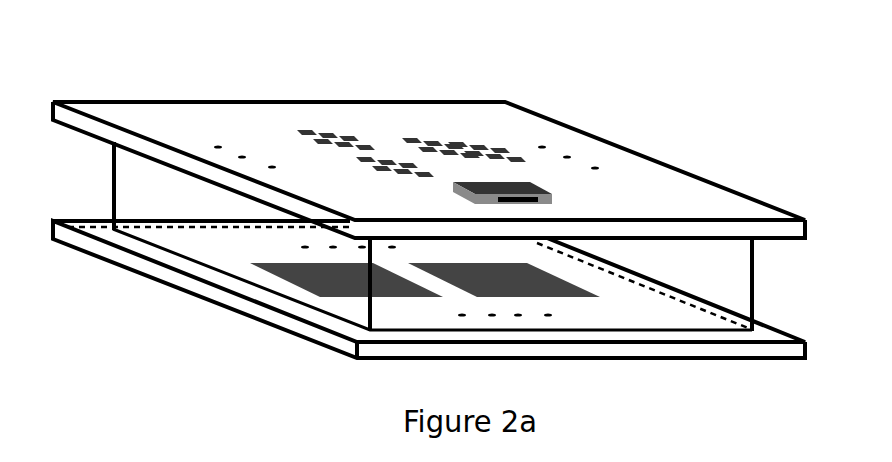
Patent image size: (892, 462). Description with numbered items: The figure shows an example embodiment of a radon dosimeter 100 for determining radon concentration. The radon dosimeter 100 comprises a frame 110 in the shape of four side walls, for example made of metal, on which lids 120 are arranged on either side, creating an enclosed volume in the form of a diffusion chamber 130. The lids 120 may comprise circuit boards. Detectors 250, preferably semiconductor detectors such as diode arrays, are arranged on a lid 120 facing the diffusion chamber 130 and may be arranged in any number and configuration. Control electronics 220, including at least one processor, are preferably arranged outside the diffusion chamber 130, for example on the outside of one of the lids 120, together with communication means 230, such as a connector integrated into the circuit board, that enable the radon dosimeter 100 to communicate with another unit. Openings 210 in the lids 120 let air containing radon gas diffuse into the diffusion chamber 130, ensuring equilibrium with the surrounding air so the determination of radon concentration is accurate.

The radon dosimeter 100 is at (429, 198).
The frame 110 is at (429, 290).
The lids 120 is at (429, 121).
The diffusion chamber 130 is at (732, 279).
The openings 210 is at (242, 156).
The control electronics 220 is at (338, 129).
The communication means 230 is at (555, 198).
The detectors 250 is at (333, 280).